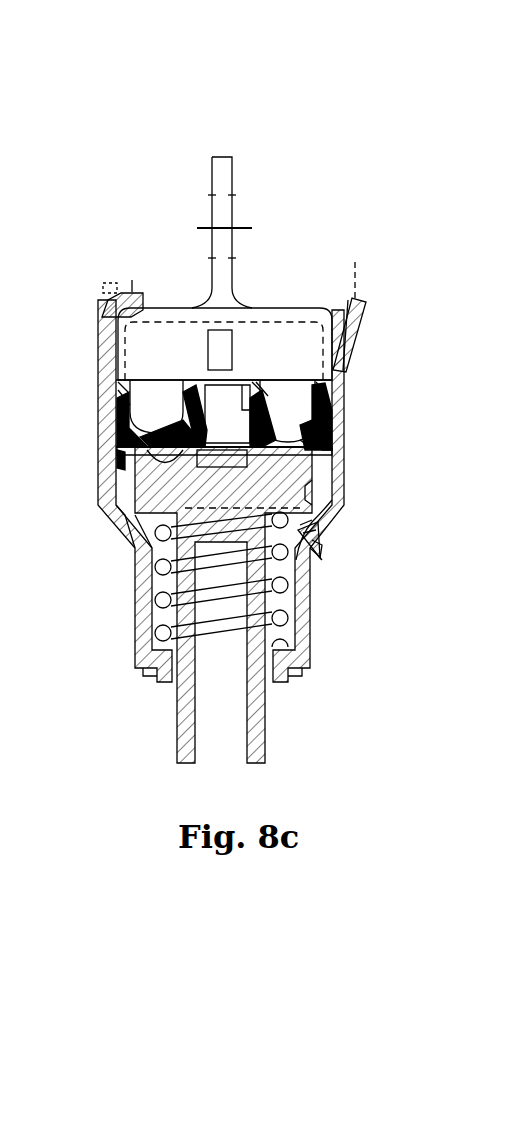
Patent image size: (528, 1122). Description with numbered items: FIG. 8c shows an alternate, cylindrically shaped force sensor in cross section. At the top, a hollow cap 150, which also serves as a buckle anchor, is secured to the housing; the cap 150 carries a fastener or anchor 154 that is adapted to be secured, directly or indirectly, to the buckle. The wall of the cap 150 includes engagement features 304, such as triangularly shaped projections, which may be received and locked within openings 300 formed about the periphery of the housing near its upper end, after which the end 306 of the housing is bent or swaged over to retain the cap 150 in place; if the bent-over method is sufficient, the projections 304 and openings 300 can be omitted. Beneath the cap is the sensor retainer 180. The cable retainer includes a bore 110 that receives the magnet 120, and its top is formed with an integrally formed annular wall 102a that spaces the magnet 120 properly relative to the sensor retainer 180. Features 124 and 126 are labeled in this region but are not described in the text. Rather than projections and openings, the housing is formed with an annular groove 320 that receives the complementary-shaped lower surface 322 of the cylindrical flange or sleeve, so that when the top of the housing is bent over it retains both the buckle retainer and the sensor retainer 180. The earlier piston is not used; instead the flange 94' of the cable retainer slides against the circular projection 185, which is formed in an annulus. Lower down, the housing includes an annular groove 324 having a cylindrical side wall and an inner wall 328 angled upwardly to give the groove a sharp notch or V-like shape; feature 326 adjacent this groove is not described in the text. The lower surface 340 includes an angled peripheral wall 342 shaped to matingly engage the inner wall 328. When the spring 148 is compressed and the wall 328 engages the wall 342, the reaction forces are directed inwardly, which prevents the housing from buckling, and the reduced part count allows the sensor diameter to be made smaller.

The fastener or anchor 154 is at (228, 177).
The cap 150 is at (288, 340).
The openings 300 is at (360, 343).
The engagement features 304 is at (338, 333).
The end of the housing 306 is at (132, 285).
The sensor retainer 180 is at (127, 437).
The bore 110 is at (283, 437).
The annular wall 102a is at (123, 450).
The lip 124 is at (128, 467).
The recess 126 is at (318, 486).
The magnet 120 is at (343, 456).
The flange 94' is at (99, 480).
The circular projection 185 is at (312, 484).
The annular groove 320 is at (115, 530).
The lower surface 322 is at (359, 527).
The lower surface 340 is at (133, 525).
The annular groove 324 is at (300, 527).
The valve seat 326 is at (304, 536).
The inner wall 328 is at (318, 546).
The angled peripheral wall 342 is at (320, 558).
The spring 148 is at (282, 618).